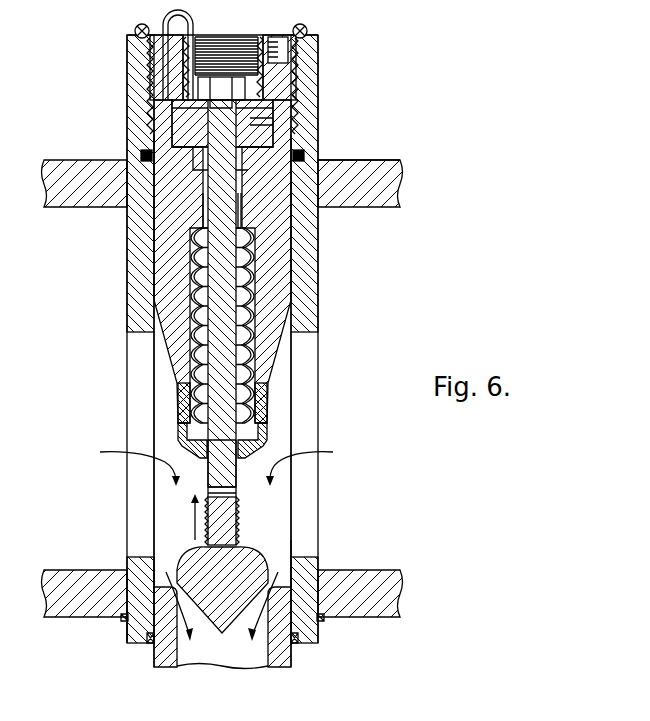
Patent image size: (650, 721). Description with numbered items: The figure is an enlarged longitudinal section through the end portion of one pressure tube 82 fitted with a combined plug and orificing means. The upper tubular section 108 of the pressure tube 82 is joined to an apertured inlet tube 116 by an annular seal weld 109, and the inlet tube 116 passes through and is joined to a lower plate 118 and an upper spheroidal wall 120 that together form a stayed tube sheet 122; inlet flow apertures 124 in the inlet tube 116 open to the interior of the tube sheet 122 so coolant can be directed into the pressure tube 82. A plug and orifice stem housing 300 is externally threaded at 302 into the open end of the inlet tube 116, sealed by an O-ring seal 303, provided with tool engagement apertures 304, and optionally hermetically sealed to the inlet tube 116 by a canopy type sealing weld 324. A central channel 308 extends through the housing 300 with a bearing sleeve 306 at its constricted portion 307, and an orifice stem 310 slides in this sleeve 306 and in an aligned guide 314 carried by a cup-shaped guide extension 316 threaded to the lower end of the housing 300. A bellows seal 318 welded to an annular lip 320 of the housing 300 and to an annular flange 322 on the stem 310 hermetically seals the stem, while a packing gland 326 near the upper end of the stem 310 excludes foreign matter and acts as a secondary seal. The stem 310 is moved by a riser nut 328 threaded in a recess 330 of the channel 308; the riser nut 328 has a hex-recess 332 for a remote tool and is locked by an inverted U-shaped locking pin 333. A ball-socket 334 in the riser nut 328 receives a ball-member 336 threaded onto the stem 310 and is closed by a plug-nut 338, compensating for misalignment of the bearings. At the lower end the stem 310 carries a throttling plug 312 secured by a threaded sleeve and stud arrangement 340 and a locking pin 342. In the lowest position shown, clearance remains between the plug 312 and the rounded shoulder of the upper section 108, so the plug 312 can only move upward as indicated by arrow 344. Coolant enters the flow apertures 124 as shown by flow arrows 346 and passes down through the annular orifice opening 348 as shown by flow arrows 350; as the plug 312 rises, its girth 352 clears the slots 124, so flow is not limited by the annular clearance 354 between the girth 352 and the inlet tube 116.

The pressure tube 82 is at (127, 640).
The upper tubular section 108 is at (278, 660).
The annular seal weld 109 is at (152, 647).
The inlet tube 116 is at (318, 316).
The lower plate 118 is at (393, 595).
The upper spheroidal wall 120 is at (393, 188).
The stayed tube sheet 122 is at (394, 160).
The inlet flow aperture 124 is at (133, 349).
The plug and orifice stem housing 300 is at (258, 37).
The external threads 302 is at (312, 70).
The O-ring seal 303 is at (305, 157).
The tool engagement aperture 304 is at (283, 44).
The bearing sleeve 306 is at (240, 212).
The constricted portion 307 is at (250, 235).
The central channel 308 is at (250, 299).
The orifice stem 310 is at (203, 360).
The throttling plug 312 is at (188, 560).
The guide 314 is at (249, 458).
The cup-shaped guide extension 316 is at (180, 447).
The bellows seal 318 is at (248, 385).
The annular lip 320 is at (268, 433).
The annular flange 322 is at (190, 228).
The canopy type sealing weld 324 is at (135, 32).
The packing gland 326 is at (140, 156).
The riser nut 328 is at (262, 122).
The threaded recess 330 is at (208, 44).
The hex-recess 332 is at (213, 92).
The locking pin 333 is at (168, 15).
The ball-socket 334 is at (220, 112).
The ball-member 336 is at (218, 128).
The plug-nut 338 is at (257, 108).
The threaded sleeve and stud arrangement 340 is at (242, 522).
The locking pin 342 is at (207, 490).
The arrow 344 is at (193, 517).
The flow arrows 346 is at (157, 468).
The annular orifice opening 348 is at (318, 626).
The flow arrows 350 is at (175, 610).
The girth 352 is at (289, 550).
The annular clearance 354 is at (290, 578).